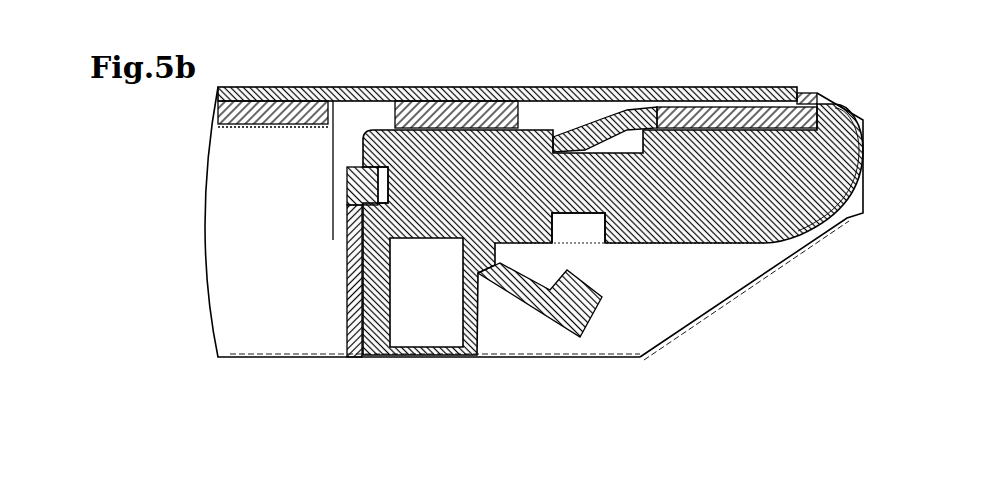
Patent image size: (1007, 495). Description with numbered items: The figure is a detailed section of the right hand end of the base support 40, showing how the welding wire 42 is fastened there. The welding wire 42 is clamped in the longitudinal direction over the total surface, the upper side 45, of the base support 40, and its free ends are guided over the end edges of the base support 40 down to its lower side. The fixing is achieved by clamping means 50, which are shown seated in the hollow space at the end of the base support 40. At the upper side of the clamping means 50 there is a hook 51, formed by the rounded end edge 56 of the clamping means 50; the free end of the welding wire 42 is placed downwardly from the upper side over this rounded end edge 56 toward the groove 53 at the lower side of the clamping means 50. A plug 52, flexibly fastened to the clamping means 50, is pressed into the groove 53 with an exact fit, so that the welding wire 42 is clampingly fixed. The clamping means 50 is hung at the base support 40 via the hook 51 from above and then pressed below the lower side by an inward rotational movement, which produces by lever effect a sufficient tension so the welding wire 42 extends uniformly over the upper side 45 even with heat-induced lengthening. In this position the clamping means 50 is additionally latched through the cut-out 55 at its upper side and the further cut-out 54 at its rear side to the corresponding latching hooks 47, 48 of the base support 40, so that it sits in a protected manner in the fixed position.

The base support 40 is at (355, 342).
The welding wire 42 is at (440, 88).
The upper side 45 is at (762, 95).
The latching hook 47 is at (577, 148).
The latching hook 48 is at (357, 178).
The clamping means 50 is at (787, 208).
The hook 51 is at (812, 104).
The plug 52 is at (580, 315).
The groove 53 is at (588, 232).
The cut-out 54 is at (358, 196).
The cut-out 55 is at (628, 150).
The rounded end edge 56 is at (860, 147).